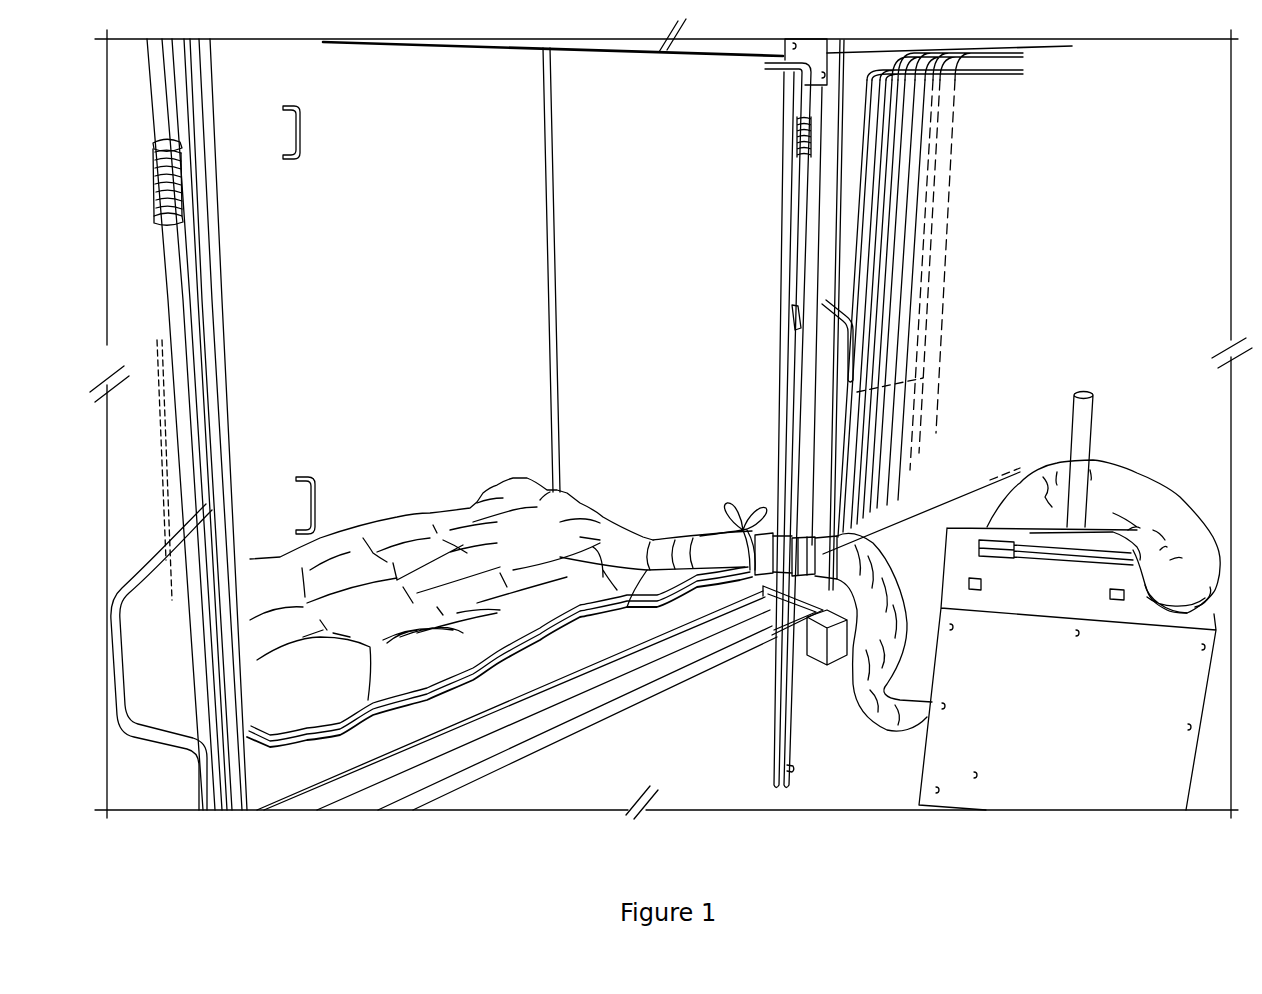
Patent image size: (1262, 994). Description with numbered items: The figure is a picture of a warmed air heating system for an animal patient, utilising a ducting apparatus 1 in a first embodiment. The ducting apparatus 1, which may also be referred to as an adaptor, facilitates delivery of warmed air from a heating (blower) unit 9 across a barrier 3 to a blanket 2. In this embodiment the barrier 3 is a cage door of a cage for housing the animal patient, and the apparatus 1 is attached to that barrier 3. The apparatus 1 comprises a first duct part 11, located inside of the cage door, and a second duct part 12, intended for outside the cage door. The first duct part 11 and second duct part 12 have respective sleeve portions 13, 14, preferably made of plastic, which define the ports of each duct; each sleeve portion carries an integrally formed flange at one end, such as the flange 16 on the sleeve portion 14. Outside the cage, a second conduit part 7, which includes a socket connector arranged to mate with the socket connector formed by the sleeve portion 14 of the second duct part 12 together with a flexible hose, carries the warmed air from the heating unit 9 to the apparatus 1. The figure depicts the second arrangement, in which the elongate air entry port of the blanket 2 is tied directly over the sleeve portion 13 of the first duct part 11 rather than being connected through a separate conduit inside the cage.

The ducting apparatus 1 is at (771, 520).
The blanket 2 is at (413, 522).
The barrier 3 is at (783, 192).
The second conduit part 7 is at (884, 648).
The heating (blower) unit 9 is at (1010, 596).
The first duct part 11 is at (732, 648).
The second duct part 12 is at (830, 665).
The sleeve portion 13 is at (763, 586).
The sleeve portion 14 is at (808, 578).
The flange 16 is at (901, 700).